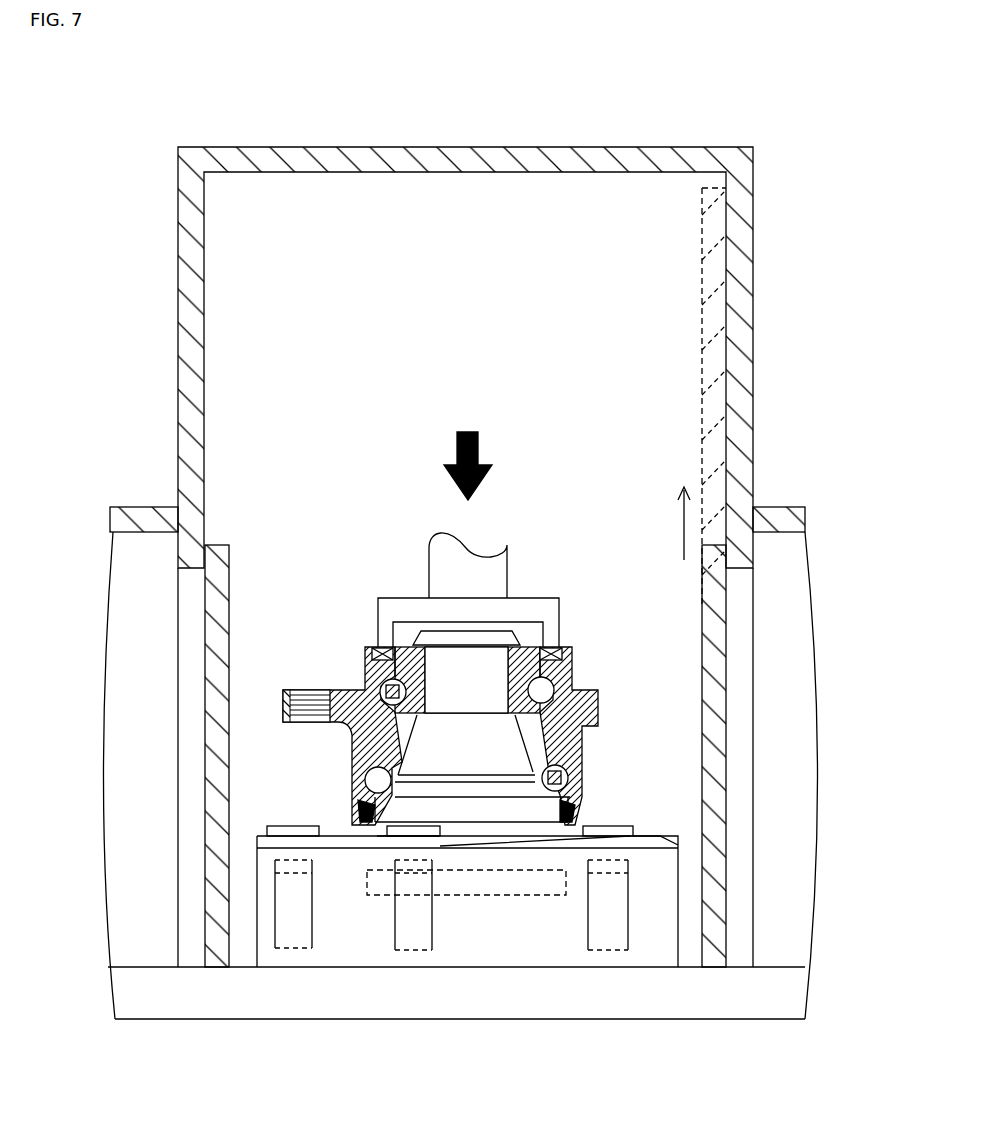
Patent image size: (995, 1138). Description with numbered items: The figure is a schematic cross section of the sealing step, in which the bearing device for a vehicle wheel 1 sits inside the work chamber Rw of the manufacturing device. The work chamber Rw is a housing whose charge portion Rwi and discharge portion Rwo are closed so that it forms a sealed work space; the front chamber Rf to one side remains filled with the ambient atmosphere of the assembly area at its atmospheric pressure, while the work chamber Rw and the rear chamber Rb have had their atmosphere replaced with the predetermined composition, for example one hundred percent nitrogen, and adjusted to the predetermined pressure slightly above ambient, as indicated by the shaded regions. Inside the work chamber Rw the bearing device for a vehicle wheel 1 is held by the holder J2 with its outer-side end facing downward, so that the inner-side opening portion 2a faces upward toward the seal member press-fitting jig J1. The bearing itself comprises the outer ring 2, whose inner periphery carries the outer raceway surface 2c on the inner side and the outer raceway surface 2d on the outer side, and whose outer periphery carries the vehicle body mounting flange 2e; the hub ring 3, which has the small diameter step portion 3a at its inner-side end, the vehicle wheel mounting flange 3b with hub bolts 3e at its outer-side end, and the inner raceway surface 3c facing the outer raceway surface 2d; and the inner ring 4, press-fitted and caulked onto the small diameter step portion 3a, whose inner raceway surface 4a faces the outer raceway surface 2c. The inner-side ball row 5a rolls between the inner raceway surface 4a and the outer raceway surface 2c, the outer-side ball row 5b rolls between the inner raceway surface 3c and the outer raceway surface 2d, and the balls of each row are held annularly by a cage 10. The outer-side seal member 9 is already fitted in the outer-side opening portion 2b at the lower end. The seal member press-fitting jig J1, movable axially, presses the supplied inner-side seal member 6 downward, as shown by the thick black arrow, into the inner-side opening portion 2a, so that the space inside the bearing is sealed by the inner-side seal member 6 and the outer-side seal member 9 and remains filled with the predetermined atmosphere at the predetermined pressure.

The work chamber Rw is at (455, 165).
The charge portion Rwi is at (218, 444).
The discharge portion Rwo is at (715, 585).
The front chamber Rf is at (130, 520).
The rear chamber Rb is at (793, 520).
The seal member press-fitting jig J1 is at (435, 551).
The holder J2 is at (492, 955).
The bearing device for a vehicle wheel 1 is at (306, 578).
The outer ring 2 is at (268, 687).
The inner-side opening portion 2a is at (547, 654).
The outer-side opening portion 2b is at (568, 806).
The outer raceway surface on the inner side 2c is at (548, 692).
The outer raceway surface on the outer side 2d is at (565, 781).
The vehicle body mounting flange 2e is at (283, 712).
The hub ring 3 is at (264, 807).
The small diameter step portion 3a is at (420, 684).
The vehicle wheel mounting flange 3b is at (648, 846).
The inner raceway surface on the outer side 3c is at (385, 798).
The hub bolts 3e is at (312, 908).
The inner ring 4 is at (508, 662).
The inner raceway surface 4a is at (508, 695).
The inner-side ball row 5a is at (383, 688).
The outer-side ball row 5b is at (366, 784).
The inner-side seal member 6 is at (373, 652).
The outer-side seal member 9 is at (362, 806).
The cage 10 is at (387, 762).